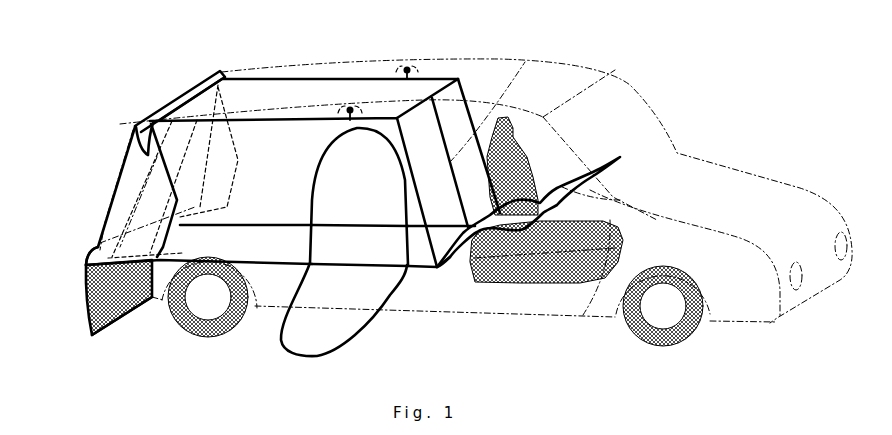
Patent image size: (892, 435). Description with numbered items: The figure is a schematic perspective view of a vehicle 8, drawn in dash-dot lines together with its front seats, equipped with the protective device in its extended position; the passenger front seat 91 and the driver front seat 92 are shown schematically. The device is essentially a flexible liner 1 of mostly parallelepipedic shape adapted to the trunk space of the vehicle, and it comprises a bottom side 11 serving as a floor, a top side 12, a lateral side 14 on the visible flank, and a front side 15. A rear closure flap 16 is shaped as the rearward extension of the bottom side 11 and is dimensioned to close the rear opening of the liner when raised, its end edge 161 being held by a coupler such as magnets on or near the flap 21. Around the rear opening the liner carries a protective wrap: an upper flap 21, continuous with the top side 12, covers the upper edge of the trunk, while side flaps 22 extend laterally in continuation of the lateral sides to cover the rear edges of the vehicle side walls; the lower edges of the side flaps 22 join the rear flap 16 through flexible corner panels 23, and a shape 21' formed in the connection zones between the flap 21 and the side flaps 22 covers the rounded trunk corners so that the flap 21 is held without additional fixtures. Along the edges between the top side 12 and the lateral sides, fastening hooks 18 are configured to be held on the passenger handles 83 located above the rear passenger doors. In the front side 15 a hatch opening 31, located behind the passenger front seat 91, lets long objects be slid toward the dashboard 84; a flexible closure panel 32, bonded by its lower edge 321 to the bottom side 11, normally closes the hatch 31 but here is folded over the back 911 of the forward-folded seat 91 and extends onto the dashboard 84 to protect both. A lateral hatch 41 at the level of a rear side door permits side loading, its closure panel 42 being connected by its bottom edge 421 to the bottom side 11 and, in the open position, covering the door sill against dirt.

The flexible liner 1 is at (263, 138).
The vehicle 8 is at (623, 117).
The bottom side 11 is at (333, 243).
The top side 12 is at (260, 97).
The lateral side 14 is at (263, 305).
The front side 15 is at (458, 110).
The rear closure flap 16 is at (118, 300).
The fastening hooks 18 is at (353, 106).
The flap 21 is at (180, 78).
The shape 21' is at (97, 127).
The side flaps 22 is at (125, 198).
The flexible corner panels 23 is at (88, 252).
The hatch opening 31 is at (452, 162).
The flexible closure panel 32 is at (555, 187).
The lateral hatch 41 is at (310, 177).
The closure panel 42 is at (323, 327).
The passenger handles 83 is at (338, 112).
The dashboard 84 is at (620, 199).
The passenger front seat 91 is at (530, 235).
The driver front seat 92 is at (517, 157).
The edge 161 is at (113, 328).
The lower edge 321 is at (466, 238).
The bottom edge 421 is at (350, 265).
The back of the front passenger seat 911 is at (521, 240).